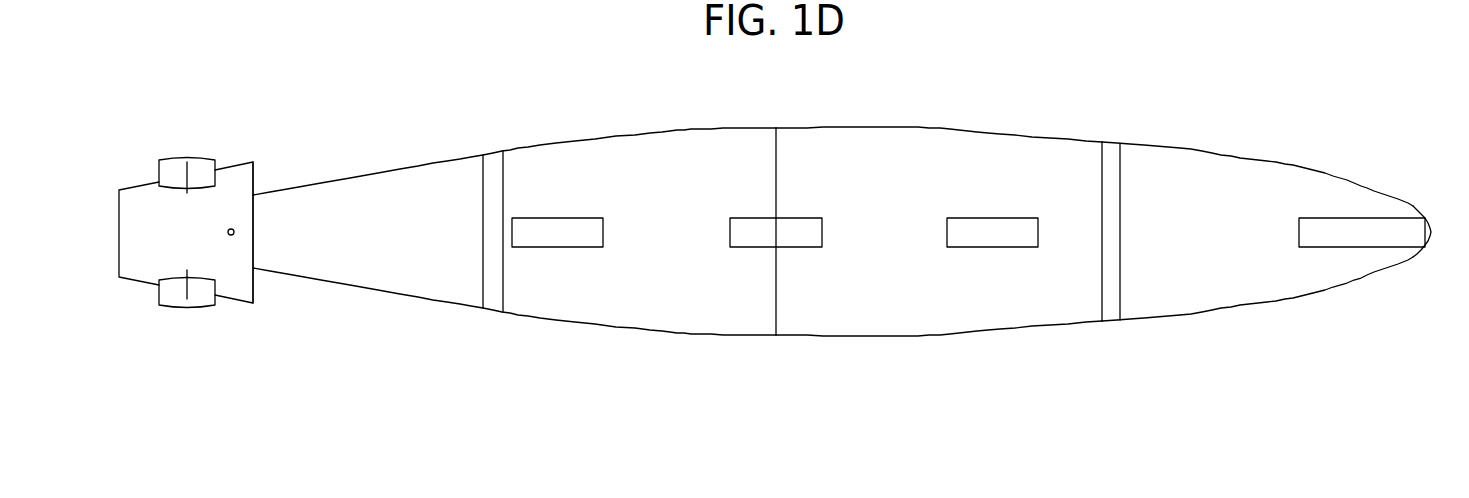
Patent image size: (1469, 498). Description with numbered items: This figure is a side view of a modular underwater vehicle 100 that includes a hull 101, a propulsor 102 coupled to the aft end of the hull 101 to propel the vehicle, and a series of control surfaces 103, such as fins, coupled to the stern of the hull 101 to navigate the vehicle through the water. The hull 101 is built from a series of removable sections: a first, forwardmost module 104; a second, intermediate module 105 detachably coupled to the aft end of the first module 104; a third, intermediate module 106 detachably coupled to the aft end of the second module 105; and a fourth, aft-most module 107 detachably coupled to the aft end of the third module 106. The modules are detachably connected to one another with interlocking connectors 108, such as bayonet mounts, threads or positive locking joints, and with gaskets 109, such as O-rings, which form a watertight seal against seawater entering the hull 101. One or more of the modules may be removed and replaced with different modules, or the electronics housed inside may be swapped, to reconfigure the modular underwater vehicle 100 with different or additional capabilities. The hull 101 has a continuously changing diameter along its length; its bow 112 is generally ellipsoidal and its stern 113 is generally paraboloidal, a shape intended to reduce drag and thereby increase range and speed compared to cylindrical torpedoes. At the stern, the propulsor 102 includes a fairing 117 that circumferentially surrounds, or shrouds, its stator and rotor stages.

The modular underwater vehicle 100 is at (1298, 336).
The hull 101 is at (1075, 82).
The propulsor 102 is at (248, 132).
The control surfaces 103 is at (173, 165).
The first, forwardmost module 104 is at (1298, 152).
The second, intermediate module 105 is at (923, 115).
The third, intermediate module 106 is at (643, 120).
The fourth, aft-most module 107 is at (378, 150).
The interlocking connectors 108 is at (483, 288).
The gaskets 109 is at (503, 300).
The bow 112 is at (1413, 206).
The stern 113 is at (263, 232).
The fairing 117 is at (143, 258).